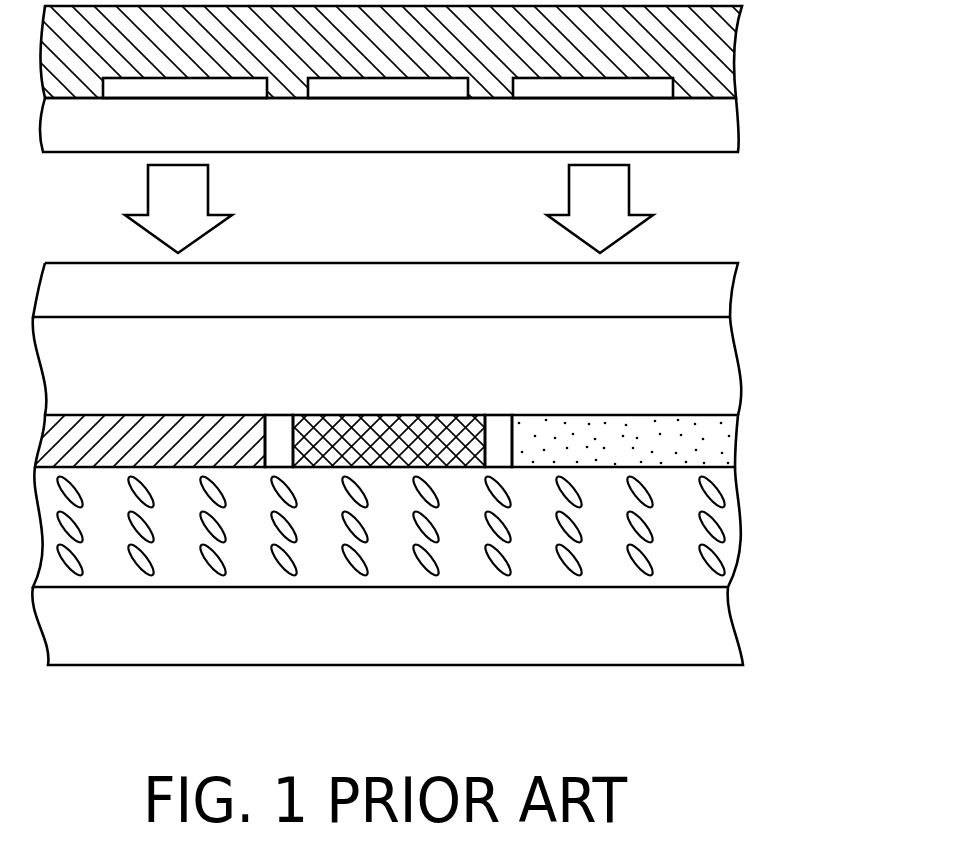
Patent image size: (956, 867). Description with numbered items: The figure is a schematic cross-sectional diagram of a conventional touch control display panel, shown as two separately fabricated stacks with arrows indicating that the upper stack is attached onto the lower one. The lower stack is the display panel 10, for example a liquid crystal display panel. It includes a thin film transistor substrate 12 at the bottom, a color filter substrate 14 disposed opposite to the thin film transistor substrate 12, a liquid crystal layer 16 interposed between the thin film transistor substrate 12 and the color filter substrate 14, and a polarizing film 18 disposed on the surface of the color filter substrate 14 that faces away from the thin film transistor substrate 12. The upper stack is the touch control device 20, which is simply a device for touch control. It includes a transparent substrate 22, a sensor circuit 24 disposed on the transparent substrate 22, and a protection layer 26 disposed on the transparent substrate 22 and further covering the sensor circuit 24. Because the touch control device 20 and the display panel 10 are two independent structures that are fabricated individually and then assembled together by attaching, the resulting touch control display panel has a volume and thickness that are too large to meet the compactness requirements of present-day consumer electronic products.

The display panel 10 is at (464, 464).
The thin film transistor substrate 12 is at (418, 626).
The color filter substrate 14 is at (708, 362).
The liquid crystal layer 16 is at (712, 556).
The polarizing film 18 is at (712, 296).
The touch control device 20 is at (468, 82).
The transparent substrate 22 is at (422, 125).
The sensor circuit 24 is at (663, 93).
The protection layer 26 is at (715, 45).